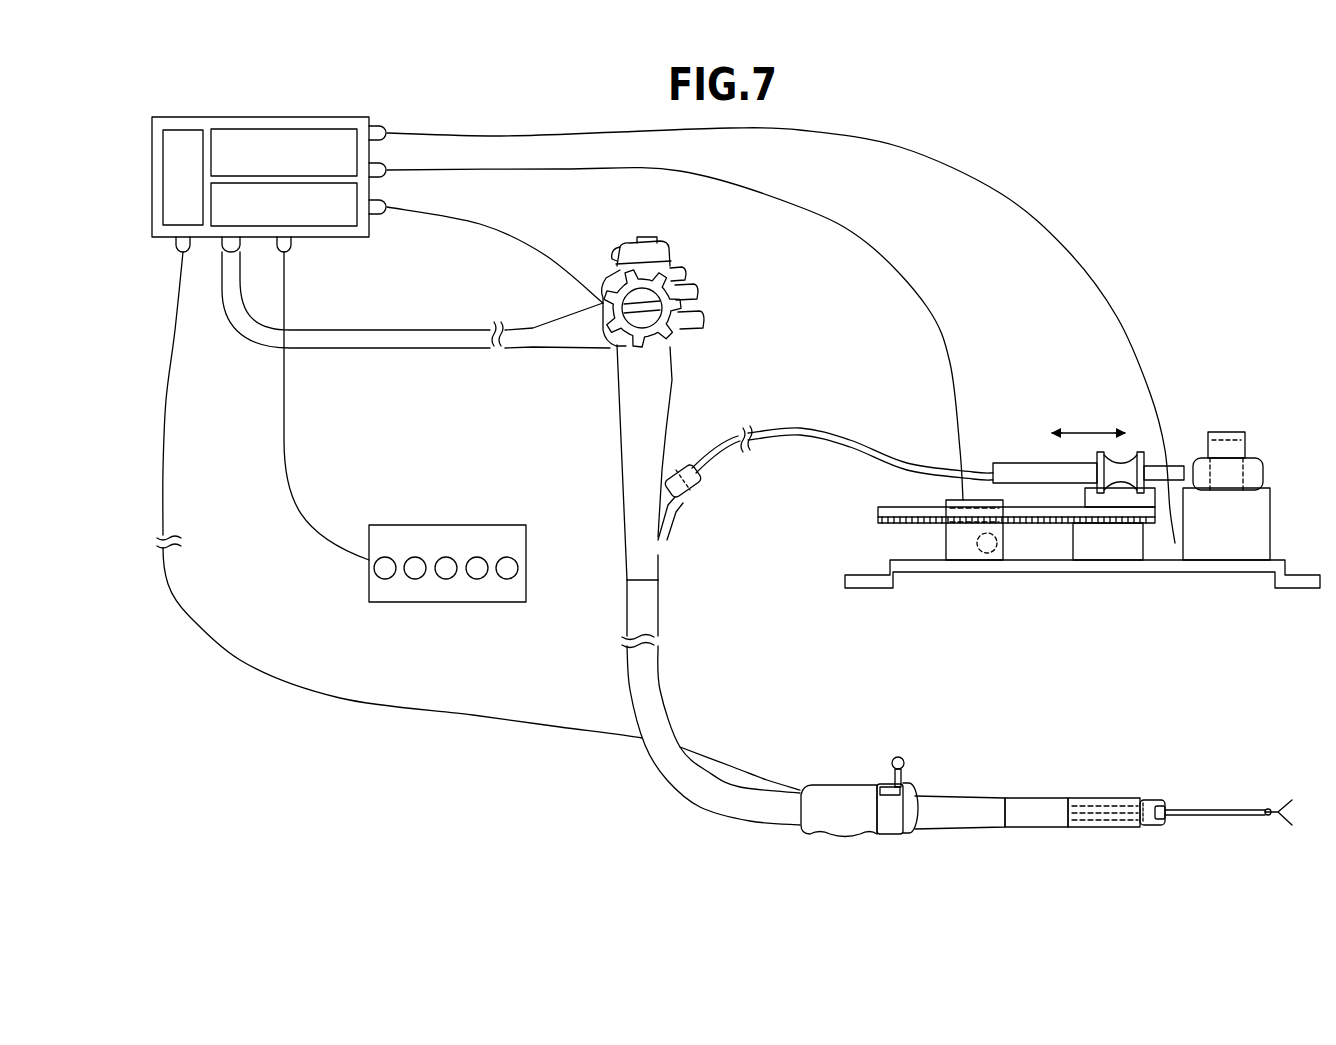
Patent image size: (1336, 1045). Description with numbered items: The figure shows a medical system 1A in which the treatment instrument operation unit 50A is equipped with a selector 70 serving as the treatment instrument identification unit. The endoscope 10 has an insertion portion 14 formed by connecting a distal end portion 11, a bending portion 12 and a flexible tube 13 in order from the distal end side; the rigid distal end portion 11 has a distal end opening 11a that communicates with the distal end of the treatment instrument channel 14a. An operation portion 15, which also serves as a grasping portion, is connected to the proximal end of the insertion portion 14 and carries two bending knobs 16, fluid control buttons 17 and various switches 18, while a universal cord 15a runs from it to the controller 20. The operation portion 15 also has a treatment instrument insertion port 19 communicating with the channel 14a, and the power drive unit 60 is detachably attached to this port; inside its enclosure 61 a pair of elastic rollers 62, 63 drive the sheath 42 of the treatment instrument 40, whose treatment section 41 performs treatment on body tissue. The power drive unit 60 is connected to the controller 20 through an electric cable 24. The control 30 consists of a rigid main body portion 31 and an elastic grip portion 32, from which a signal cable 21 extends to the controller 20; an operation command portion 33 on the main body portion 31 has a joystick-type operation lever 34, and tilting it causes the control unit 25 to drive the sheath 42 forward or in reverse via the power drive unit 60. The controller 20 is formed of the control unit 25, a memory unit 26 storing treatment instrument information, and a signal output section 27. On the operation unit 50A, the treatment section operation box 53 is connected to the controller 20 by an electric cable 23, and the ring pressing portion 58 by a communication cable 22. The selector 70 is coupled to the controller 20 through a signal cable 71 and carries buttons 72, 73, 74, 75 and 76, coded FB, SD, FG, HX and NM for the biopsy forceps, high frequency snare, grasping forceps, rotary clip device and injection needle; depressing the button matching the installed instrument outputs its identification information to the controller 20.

The medical system 1A is at (1125, 224).
The endoscope 10 is at (705, 592).
The distal end portion 11 is at (1148, 800).
The distal end opening 11a is at (1160, 826).
The bending portion 12 is at (1050, 799).
The flexible tube 13 is at (968, 797).
The endoscope insertion portion 14 is at (940, 750).
The treatment instrument channel 14a is at (1092, 822).
The operation portion 15 is at (594, 410).
The universal cord 15a is at (343, 350).
The bending knobs 16 is at (606, 346).
The fluid control buttons 17 is at (707, 264).
The switches 18 is at (603, 241).
The treatment instrument insertion port 19 is at (692, 512).
The controller 20 is at (237, 117).
The signal cable 21 is at (350, 705).
The communication cable 22 is at (1128, 333).
The electric cable 23 is at (945, 333).
The electric cable 24 is at (470, 245).
The control unit 25 is at (152, 173).
The memory unit 26 is at (300, 129).
The signal output section 27 is at (326, 237).
The control 30 is at (930, 875).
The main body portion 31 is at (899, 830).
The grip portion 32 is at (838, 828).
The operation command portion 33 is at (888, 776).
The operation lever 34 is at (904, 758).
The treatment instrument 40 is at (854, 488).
The treatment section 41 is at (1281, 826).
The sheath 42 is at (706, 432).
The treatment instrument operation unit 50A is at (1105, 580).
The treatment section operation box 53 is at (964, 560).
The ring pressing portion 58 is at (1237, 548).
The power drive unit 60 is at (704, 503).
The enclosure 61 is at (700, 492).
The roller 62 is at (684, 468).
The roller 63 is at (700, 480).
The selector 70 is at (447, 525).
The signal cable 71 is at (300, 495).
The button 72 is at (385, 579).
The button 73 is at (416, 579).
The button 74 is at (446, 579).
The button 75 is at (477, 579).
The button 76 is at (507, 579).